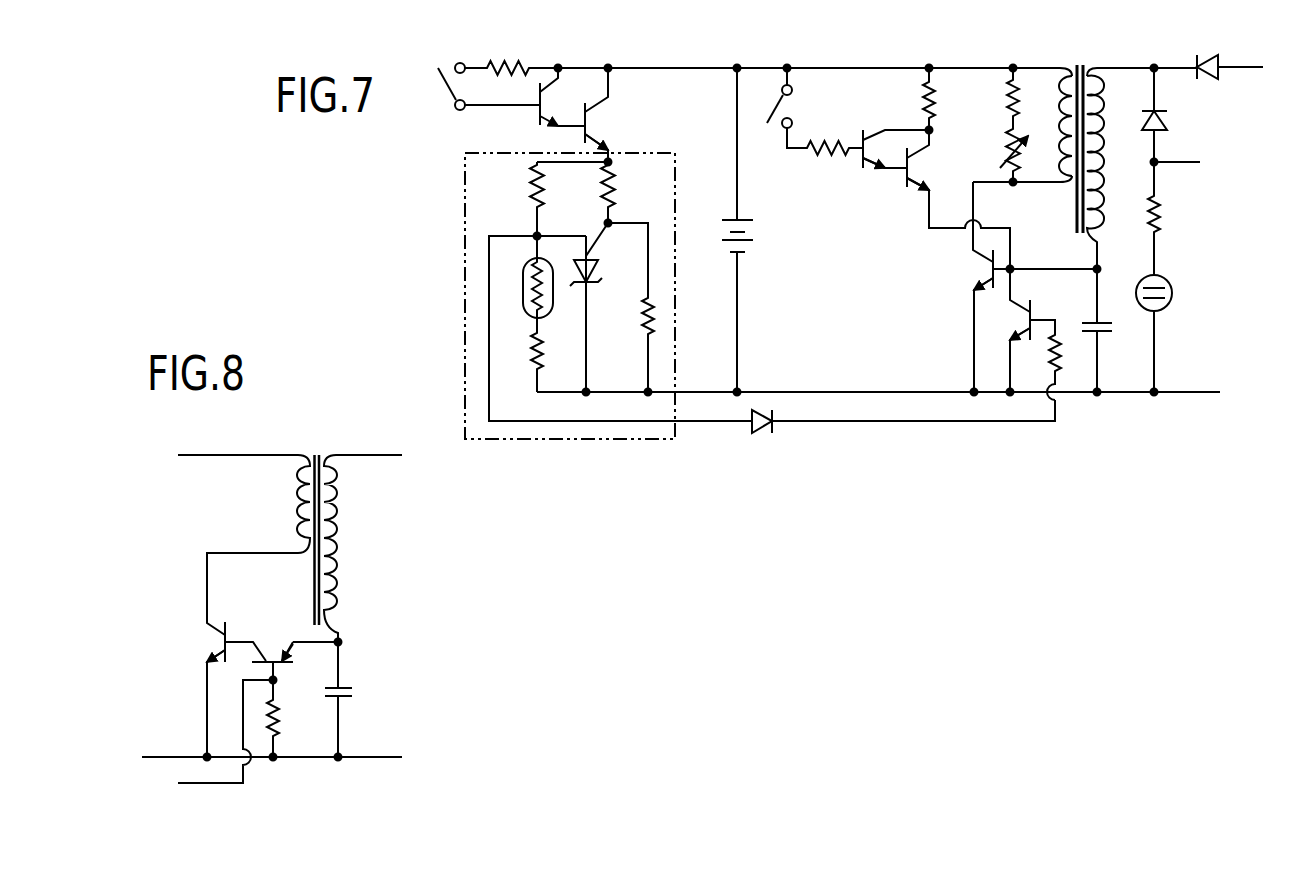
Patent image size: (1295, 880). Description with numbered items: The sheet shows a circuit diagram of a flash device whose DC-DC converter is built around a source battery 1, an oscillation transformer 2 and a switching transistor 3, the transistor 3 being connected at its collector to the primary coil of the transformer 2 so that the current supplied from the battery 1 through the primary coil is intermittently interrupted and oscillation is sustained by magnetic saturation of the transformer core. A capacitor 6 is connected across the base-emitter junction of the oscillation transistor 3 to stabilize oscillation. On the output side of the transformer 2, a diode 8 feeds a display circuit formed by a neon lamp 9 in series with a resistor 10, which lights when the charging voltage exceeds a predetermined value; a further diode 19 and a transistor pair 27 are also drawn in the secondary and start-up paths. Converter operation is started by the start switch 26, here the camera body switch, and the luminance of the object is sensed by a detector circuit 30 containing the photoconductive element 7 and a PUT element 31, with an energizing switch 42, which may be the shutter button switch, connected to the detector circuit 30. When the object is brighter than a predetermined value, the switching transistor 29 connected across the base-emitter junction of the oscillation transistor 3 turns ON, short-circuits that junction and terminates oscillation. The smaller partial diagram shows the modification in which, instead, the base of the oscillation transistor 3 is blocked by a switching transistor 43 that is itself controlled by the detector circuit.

In FIG. 7, the source battery 1 is at (752, 234).
In FIG. 7, the oscillation transformer 2 is at (1096, 58).
In FIG. 8, the oscillation transformer 2 is at (318, 452).
In FIG. 7, the switching transistor 3 is at (980, 272).
In FIG. 8, the switching transistor 3 is at (218, 655).
In FIG. 7, the capacitor 6 is at (1112, 322).
In FIG. 8, the capacitor 6 is at (355, 690).
In FIG. 7, the photoconductive element 7 is at (522, 290).
In FIG. 7, the diode 8 is at (1165, 120).
In FIG. 7, the neon lamp 9 is at (1172, 293).
In FIG. 7, the resistor 10 is at (1165, 215).
In FIG. 7, the diode 19 is at (1210, 78).
In FIG. 7, the start switch 26 is at (795, 101).
In FIG. 7, the transistor pair 27 is at (896, 160).
In FIG. 7, the switching transistor 29 is at (1018, 335).
In FIG. 7, the detector circuit 30 is at (612, 440).
In FIG. 7, the PUT element 31 is at (600, 270).
In FIG. 7, the energizing switch 42 is at (438, 75).
In FIG. 8, the switching transistor 43 is at (268, 652).